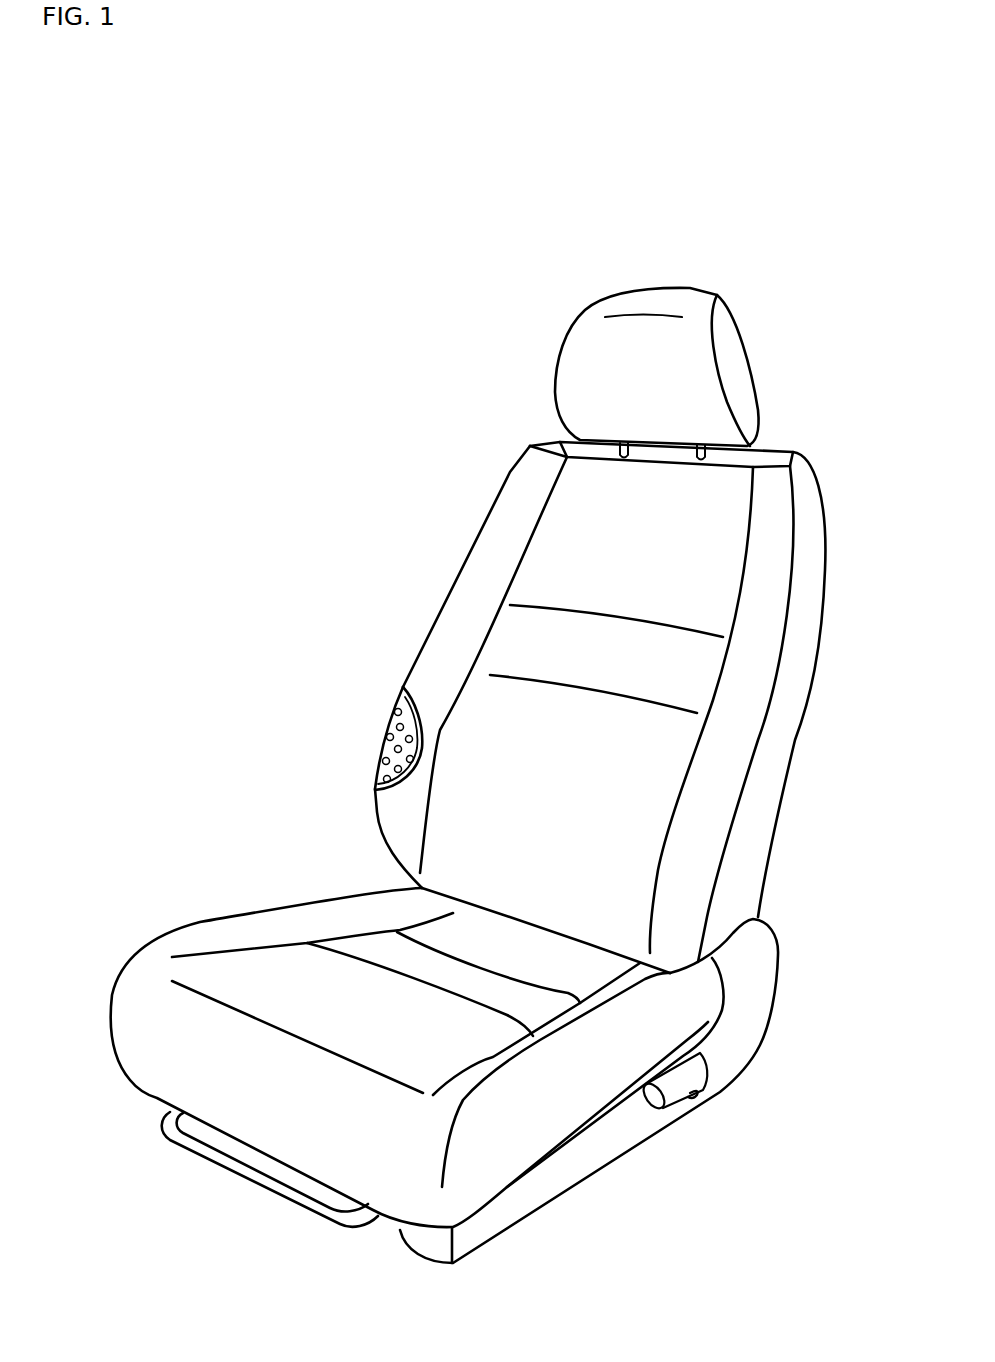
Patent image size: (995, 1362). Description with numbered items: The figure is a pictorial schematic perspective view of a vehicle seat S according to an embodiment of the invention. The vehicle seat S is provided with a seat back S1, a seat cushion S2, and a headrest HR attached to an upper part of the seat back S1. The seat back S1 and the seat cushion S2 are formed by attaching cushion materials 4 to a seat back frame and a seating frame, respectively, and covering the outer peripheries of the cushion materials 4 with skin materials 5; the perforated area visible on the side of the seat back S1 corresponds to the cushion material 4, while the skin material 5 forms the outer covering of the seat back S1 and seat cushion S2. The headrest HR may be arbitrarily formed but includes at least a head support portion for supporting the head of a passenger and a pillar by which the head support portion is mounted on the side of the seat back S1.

The vehicle seat S is at (193, 228).
The headrest HR is at (552, 274).
The seat back S1 is at (423, 521).
The seat cushion S2 is at (255, 873).
The skin material 5 is at (442, 645).
The cushion material 4 is at (383, 742).